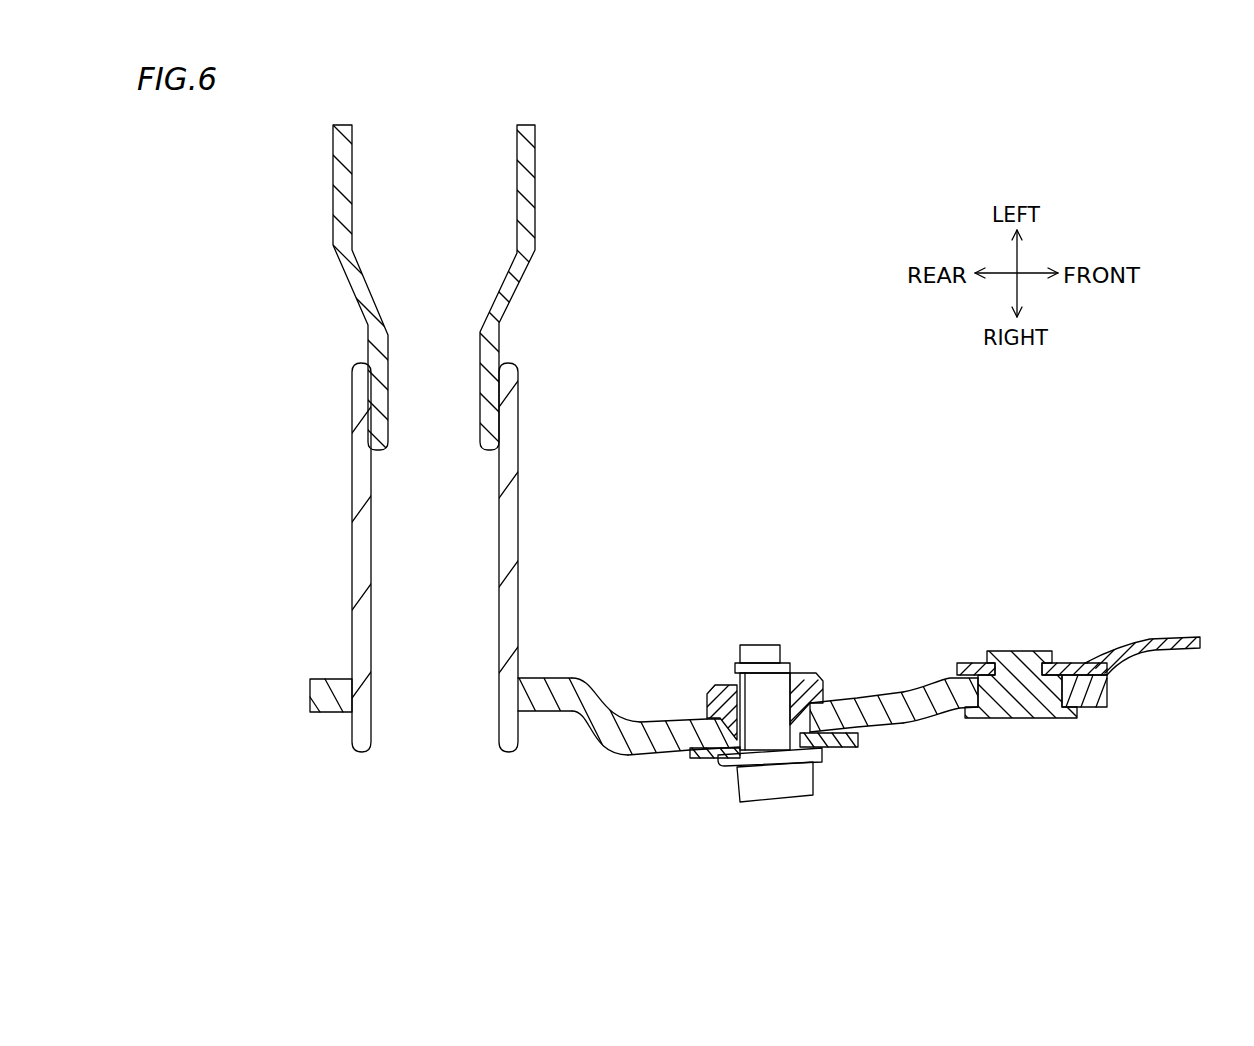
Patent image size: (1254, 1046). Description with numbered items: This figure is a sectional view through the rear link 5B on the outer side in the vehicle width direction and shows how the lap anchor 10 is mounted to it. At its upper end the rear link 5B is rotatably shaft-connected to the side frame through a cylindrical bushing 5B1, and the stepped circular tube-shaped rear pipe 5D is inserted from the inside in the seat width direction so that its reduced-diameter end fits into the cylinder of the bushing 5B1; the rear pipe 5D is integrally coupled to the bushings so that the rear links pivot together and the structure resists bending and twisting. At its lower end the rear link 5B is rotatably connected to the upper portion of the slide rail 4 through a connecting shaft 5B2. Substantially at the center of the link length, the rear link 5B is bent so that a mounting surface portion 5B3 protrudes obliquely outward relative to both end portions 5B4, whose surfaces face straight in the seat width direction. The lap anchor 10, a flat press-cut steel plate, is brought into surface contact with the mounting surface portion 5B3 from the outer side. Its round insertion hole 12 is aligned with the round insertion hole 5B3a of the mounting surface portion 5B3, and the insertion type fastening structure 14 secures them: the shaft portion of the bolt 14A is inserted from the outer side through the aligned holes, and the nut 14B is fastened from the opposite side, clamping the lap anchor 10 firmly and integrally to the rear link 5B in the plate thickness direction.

The rear pipe 5D is at (525, 185).
The bushing 5B1 is at (508, 533).
The rear link 5B is at (755, 715).
The connecting shaft 5B2 is at (1018, 668).
The mounting surface portion 5B3 is at (765, 683).
The insertion hole 5B3a is at (730, 738).
The end portion 5B4 is at (566, 695).
The slide rail 4 is at (1132, 653).
The lap anchor 10 is at (700, 763).
The insertion hole 12 is at (753, 750).
The fastening structure 14 is at (757, 643).
The bolt 14A is at (761, 645).
The nut 14B is at (811, 676).